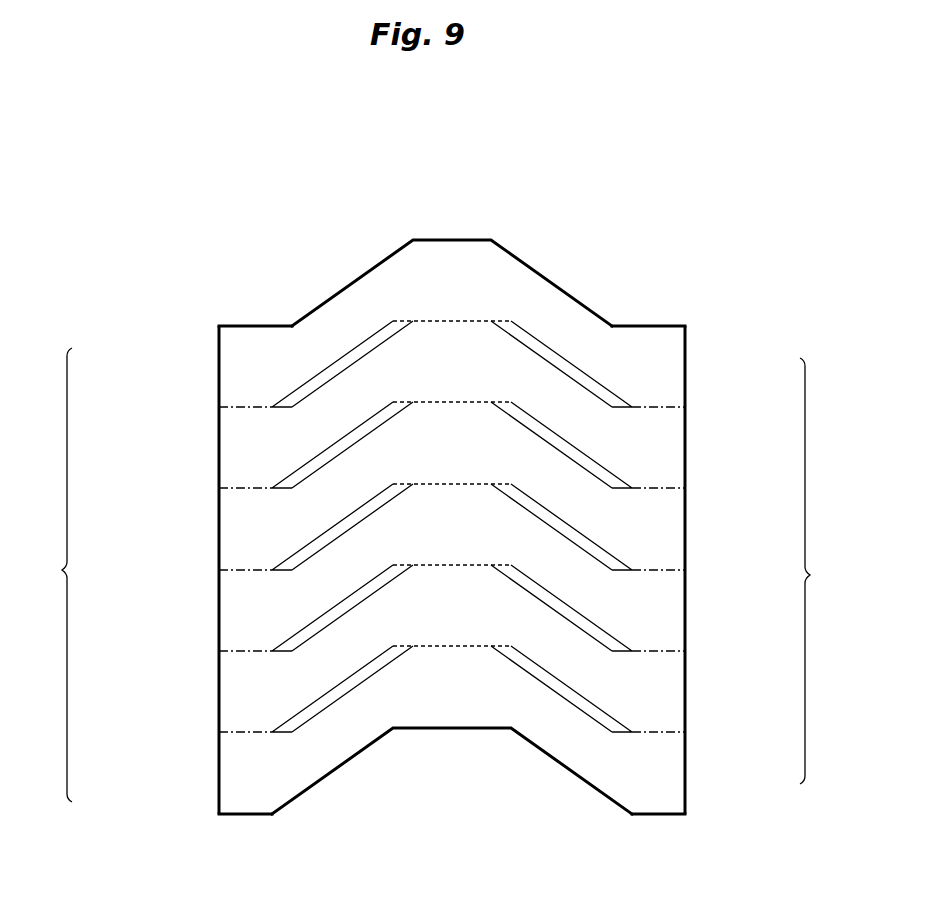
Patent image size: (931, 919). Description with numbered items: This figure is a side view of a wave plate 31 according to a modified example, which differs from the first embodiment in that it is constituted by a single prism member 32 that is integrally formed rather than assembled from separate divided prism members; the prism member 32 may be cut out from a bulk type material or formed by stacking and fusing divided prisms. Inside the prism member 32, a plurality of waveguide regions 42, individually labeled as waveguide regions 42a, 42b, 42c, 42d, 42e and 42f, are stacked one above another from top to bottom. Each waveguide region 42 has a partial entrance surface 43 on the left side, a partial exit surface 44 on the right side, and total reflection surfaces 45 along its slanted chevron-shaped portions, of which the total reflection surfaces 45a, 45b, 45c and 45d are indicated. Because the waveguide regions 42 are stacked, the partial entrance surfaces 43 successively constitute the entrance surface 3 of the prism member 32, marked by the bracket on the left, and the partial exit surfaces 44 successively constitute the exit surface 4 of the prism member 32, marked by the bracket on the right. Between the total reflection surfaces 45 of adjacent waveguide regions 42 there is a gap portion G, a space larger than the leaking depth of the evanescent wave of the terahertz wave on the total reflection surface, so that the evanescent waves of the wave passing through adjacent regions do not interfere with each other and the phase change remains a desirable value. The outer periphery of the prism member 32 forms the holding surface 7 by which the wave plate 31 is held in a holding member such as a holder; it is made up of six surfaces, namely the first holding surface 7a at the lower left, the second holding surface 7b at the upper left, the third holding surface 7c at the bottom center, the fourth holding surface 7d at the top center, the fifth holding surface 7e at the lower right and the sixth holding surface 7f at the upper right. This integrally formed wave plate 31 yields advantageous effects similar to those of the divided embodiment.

The entrance surface 3 is at (58, 575).
The exit surface 4 is at (816, 571).
The holding surface 7 is at (457, 538).
The first holding surface 7a is at (241, 816).
The second holding surface 7b is at (257, 322).
The third holding surface 7c is at (452, 732).
The fourth holding surface 7d is at (458, 240).
The fifth holding surface 7e is at (654, 816).
The sixth holding surface 7f is at (642, 327).
The wave plate 31 is at (582, 176).
The prism member 32 is at (721, 312).
The waveguide regions 42 is at (391, 543).
The waveguide region 42a is at (253, 346).
The waveguide region 42b is at (253, 418).
The waveguide region 42c is at (253, 498).
The waveguide region 42d is at (253, 595).
The waveguide region 42e is at (253, 671).
The waveguide region 42f is at (253, 753).
The partial entrance surface 43 is at (219, 368).
The partial exit surface 44 is at (688, 384).
The total reflection surfaces 45 is at (475, 468).
The total reflection surface 45a is at (364, 500).
The total reflection surface 45b is at (369, 407).
The total reflection surface 45c is at (567, 425).
The total reflection surface 45d is at (540, 500).
The gap portion G is at (337, 363).